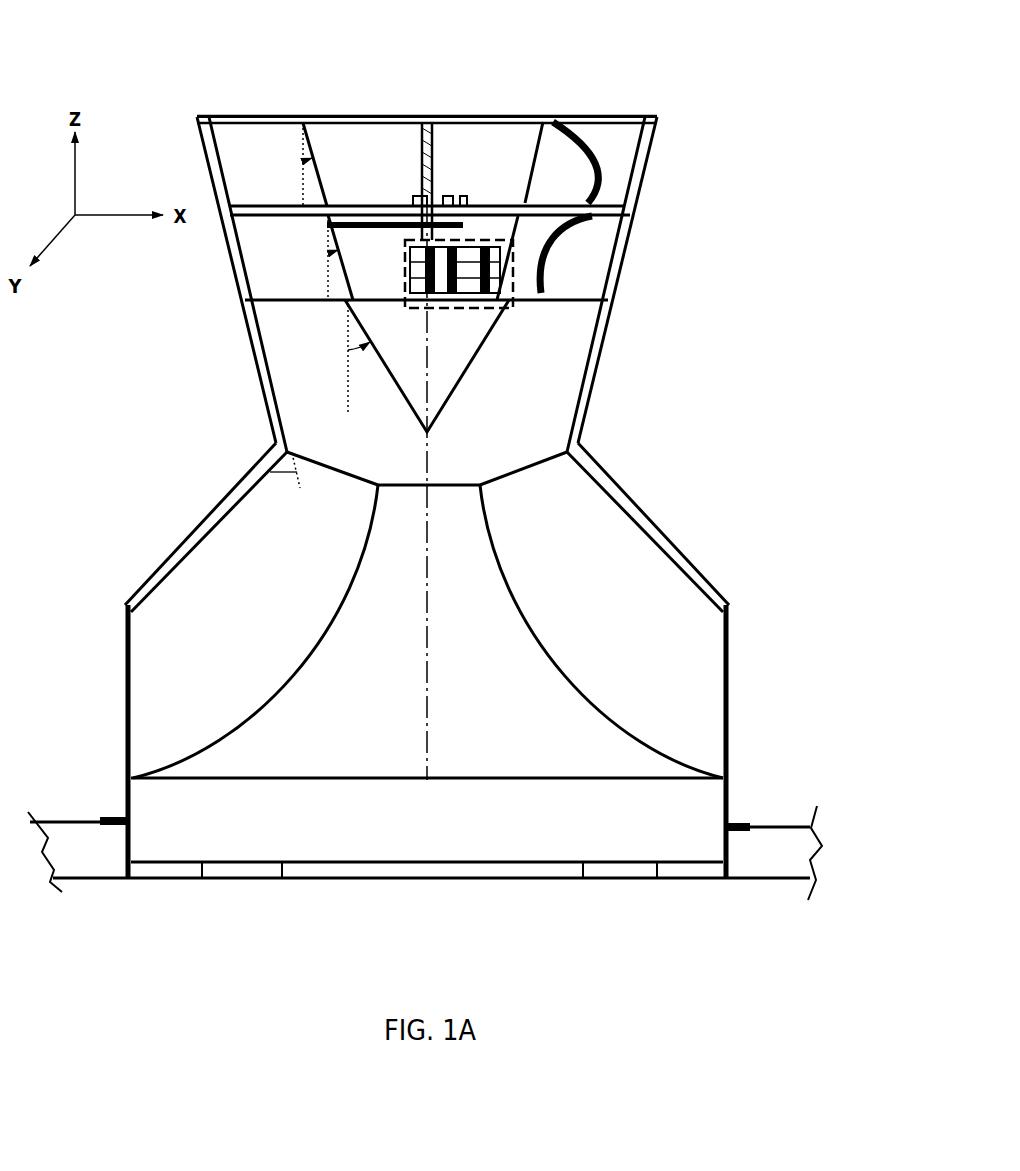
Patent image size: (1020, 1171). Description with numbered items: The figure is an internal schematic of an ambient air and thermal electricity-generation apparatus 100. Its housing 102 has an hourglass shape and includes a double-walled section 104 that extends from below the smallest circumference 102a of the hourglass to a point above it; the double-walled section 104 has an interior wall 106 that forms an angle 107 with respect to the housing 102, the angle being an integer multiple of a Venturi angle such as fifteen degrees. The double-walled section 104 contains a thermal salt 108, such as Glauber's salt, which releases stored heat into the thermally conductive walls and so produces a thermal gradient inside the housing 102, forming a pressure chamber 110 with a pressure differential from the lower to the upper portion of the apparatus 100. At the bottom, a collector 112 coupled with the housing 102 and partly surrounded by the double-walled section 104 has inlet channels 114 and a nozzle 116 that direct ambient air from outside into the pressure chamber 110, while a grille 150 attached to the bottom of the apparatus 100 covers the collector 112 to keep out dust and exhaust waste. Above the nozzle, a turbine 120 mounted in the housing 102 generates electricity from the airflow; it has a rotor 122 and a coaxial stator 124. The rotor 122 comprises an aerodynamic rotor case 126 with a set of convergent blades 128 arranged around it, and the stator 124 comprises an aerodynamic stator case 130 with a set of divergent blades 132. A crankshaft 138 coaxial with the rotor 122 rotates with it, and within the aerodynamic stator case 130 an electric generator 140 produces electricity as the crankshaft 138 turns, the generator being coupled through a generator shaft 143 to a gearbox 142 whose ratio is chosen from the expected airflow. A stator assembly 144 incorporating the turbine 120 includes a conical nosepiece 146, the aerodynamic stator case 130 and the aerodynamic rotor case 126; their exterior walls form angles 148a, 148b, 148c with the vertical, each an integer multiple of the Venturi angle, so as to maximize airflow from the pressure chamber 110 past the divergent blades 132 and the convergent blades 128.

The ambient air and thermal electricity-generation apparatus 100 is at (226, 64).
The housing 102 is at (418, 527).
The smallest circumference 102a is at (276, 437).
The double-walled section 104 is at (211, 513).
The interior wall 106 is at (243, 513).
The angle 107 is at (324, 483).
The thermal salt 108 is at (261, 350).
The pressure chamber 110 is at (437, 462).
The collector 112 is at (540, 637).
The inlet channels 114 is at (124, 703).
The nozzle 116 is at (469, 478).
The turbine 120 is at (509, 115).
The rotor 122 is at (632, 186).
The stator 124 is at (623, 232).
The aerodynamic rotor case 126 is at (538, 160).
The convergent blades 128 is at (602, 158).
The aerodynamic stator case 130 is at (522, 248).
The divergent blades 132 is at (552, 289).
The crankshaft 138 is at (423, 145).
The electric generator 140 is at (508, 308).
The gearbox 142 is at (410, 243).
The generator shaft 143 is at (463, 236).
The stator assembly 144 is at (314, 147).
The conical nosepiece 146 is at (458, 395).
The angle 148a is at (371, 356).
The angle 148b is at (319, 257).
The angle 148c is at (292, 164).
The grille 150 is at (589, 881).